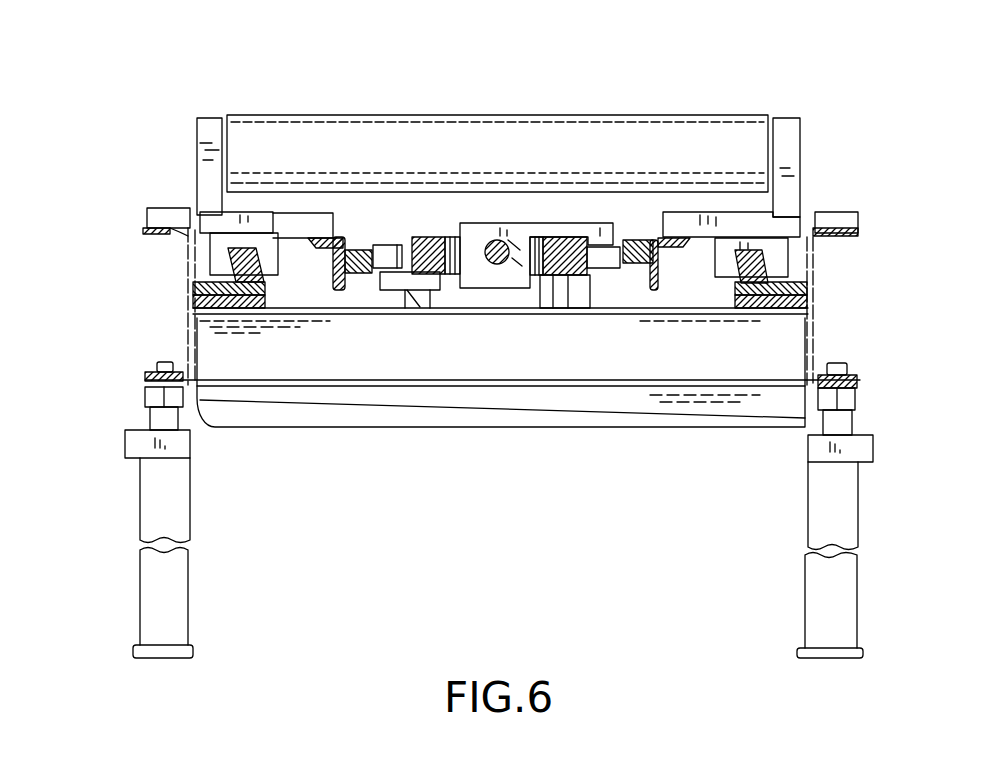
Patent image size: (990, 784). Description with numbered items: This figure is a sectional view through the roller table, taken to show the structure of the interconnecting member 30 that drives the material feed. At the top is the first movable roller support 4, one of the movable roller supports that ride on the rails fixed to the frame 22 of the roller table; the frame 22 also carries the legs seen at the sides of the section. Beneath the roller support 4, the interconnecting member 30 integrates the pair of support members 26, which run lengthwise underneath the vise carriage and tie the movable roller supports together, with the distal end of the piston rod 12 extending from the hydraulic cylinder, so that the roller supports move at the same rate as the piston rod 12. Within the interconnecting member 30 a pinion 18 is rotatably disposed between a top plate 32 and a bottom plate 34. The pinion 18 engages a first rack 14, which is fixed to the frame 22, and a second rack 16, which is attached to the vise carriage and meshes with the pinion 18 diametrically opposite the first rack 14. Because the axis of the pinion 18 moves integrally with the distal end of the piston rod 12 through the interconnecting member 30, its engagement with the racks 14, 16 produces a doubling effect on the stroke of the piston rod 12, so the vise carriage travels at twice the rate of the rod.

The first movable roller support 4 is at (757, 98).
The piston rod 12 is at (505, 243).
The first rack 14 is at (570, 282).
The second rack 16 is at (413, 237).
The pinion 18 is at (540, 282).
The frame 22 is at (868, 522).
The support members 26 is at (330, 266).
The interconnecting member 30 is at (462, 207).
The top plate 32 is at (420, 283).
The bottom plate 34 is at (570, 225).